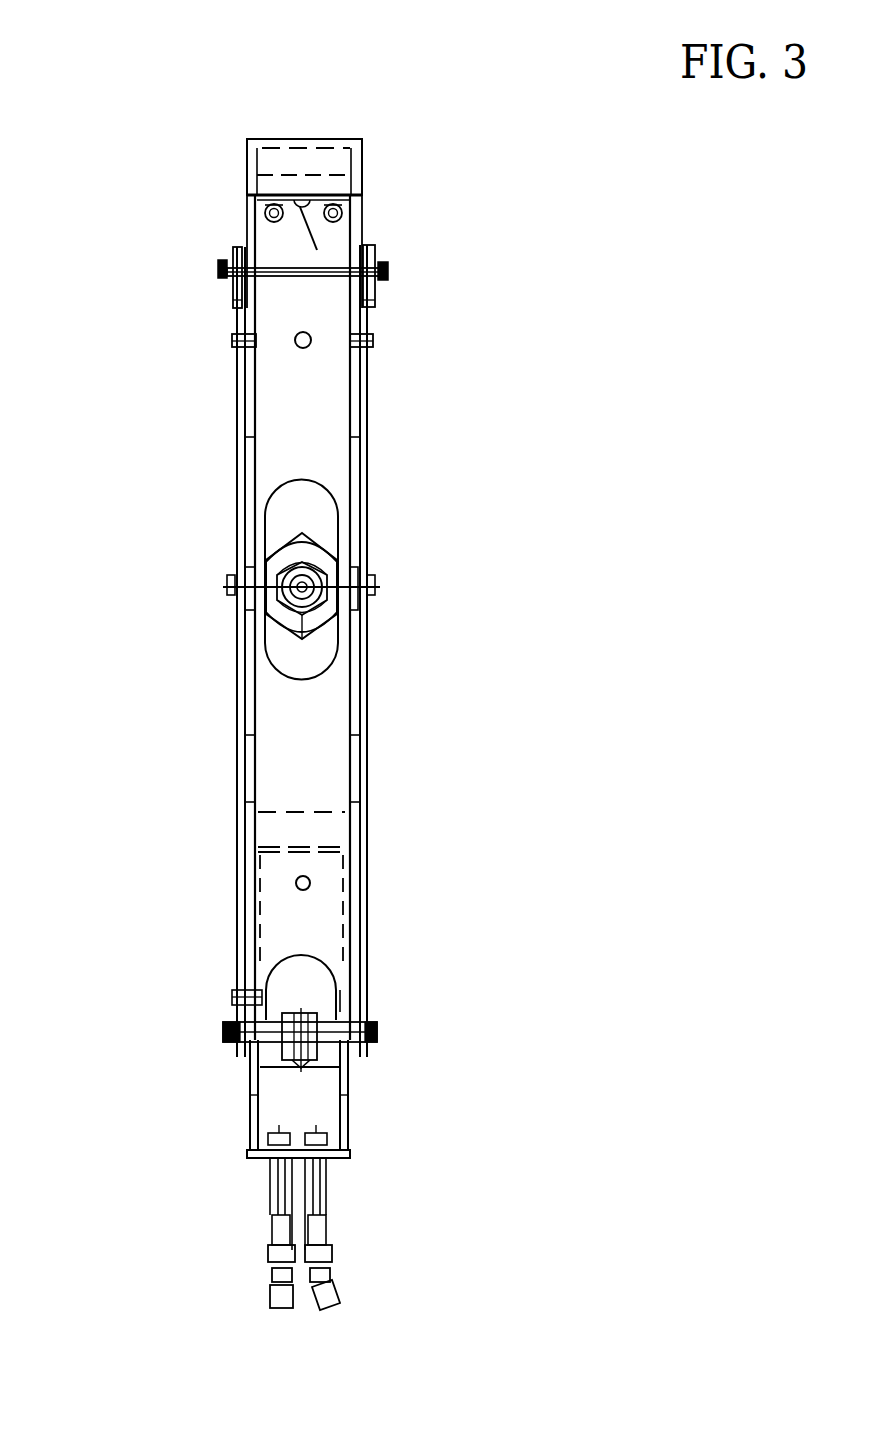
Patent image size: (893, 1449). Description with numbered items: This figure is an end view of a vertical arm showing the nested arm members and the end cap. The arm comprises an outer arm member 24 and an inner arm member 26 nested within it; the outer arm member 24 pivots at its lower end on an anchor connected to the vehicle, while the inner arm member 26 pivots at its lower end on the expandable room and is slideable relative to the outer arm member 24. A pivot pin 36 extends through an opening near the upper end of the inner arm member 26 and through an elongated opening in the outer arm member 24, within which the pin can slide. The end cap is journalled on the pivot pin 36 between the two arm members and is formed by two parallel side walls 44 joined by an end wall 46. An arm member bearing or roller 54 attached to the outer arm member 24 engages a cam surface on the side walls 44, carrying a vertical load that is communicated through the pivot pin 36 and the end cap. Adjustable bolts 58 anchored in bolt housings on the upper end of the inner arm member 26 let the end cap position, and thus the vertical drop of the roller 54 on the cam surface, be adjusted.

The outer arm member 24 is at (363, 763).
The inner arm member 26 is at (277, 405).
The pivot pin 36 is at (217, 260).
The side walls 44 is at (245, 182).
The end wall 46 is at (300, 138).
The arm member bearing or roller 54 is at (226, 338).
The adjustable bolts 58 is at (317, 250).